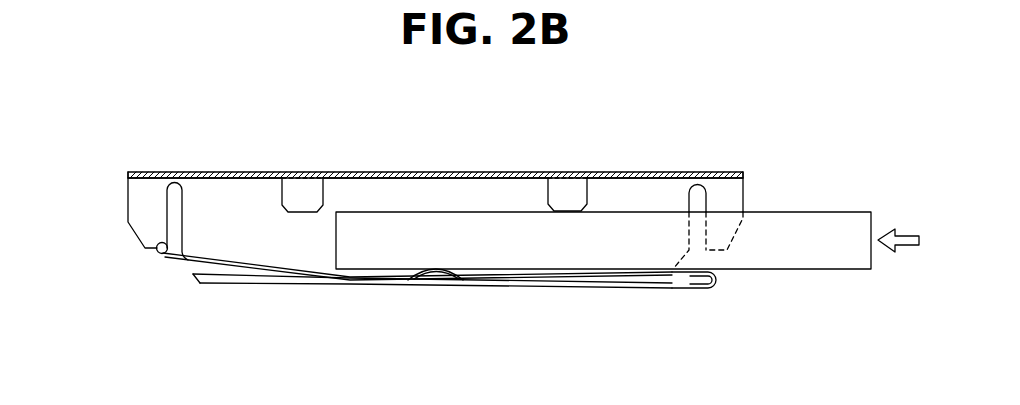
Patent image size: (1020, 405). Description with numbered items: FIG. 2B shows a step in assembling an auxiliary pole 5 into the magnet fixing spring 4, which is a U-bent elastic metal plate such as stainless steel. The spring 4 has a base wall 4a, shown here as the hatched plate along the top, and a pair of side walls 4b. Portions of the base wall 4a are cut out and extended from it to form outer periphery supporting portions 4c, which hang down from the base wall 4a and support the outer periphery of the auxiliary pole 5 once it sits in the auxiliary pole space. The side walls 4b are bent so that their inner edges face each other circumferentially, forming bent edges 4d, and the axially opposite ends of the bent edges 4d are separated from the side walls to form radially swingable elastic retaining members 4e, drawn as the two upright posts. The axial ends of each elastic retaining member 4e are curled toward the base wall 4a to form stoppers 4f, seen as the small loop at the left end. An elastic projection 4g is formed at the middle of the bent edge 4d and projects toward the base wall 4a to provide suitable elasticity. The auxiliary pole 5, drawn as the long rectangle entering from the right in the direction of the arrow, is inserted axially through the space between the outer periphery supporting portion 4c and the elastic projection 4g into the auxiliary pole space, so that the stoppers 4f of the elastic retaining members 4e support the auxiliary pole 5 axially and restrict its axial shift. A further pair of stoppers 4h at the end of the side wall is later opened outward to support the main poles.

The magnet fixing spring 4 is at (672, 160).
The base wall 4a is at (447, 172).
The side wall 4b is at (231, 188).
The outer periphery supporting portion 4c is at (563, 190).
The bent edge 4d is at (365, 283).
The elastic retaining member 4e is at (178, 263).
The stopper 4f is at (156, 256).
The elastic projection 4g is at (425, 280).
The stopper 4h is at (143, 212).
The auxiliary pole 5 is at (827, 222).